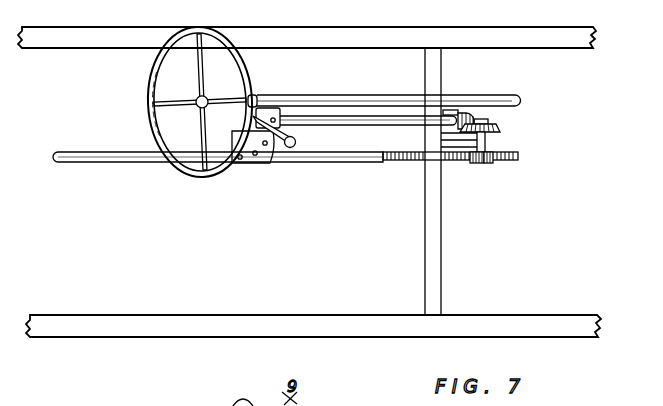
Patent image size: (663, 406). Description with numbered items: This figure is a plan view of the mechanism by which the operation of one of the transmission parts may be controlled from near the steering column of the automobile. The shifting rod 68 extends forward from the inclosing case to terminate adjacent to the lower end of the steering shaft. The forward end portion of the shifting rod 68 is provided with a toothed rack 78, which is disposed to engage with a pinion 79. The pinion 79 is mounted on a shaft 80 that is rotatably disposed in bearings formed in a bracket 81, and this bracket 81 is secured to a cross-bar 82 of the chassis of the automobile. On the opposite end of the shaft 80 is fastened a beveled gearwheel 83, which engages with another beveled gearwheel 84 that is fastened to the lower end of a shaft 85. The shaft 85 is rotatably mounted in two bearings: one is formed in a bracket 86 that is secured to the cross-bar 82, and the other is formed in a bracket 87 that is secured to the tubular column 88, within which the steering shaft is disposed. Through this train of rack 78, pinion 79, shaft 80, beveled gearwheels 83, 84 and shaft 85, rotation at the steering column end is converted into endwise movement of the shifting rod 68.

The shifting rod 68 is at (97, 158).
The toothed rack 78 is at (510, 158).
The pinion 79 is at (489, 164).
The shaft 80 is at (482, 164).
The bracket 81 is at (487, 143).
The cross-bar 82 is at (430, 182).
The beveled gearwheel 83 is at (496, 128).
The beveled gearwheel 84 is at (488, 124).
The shaft 85 is at (412, 119).
The bracket 86 is at (467, 112).
The bracket 87 is at (258, 110).
The tubular column 88 is at (364, 96).